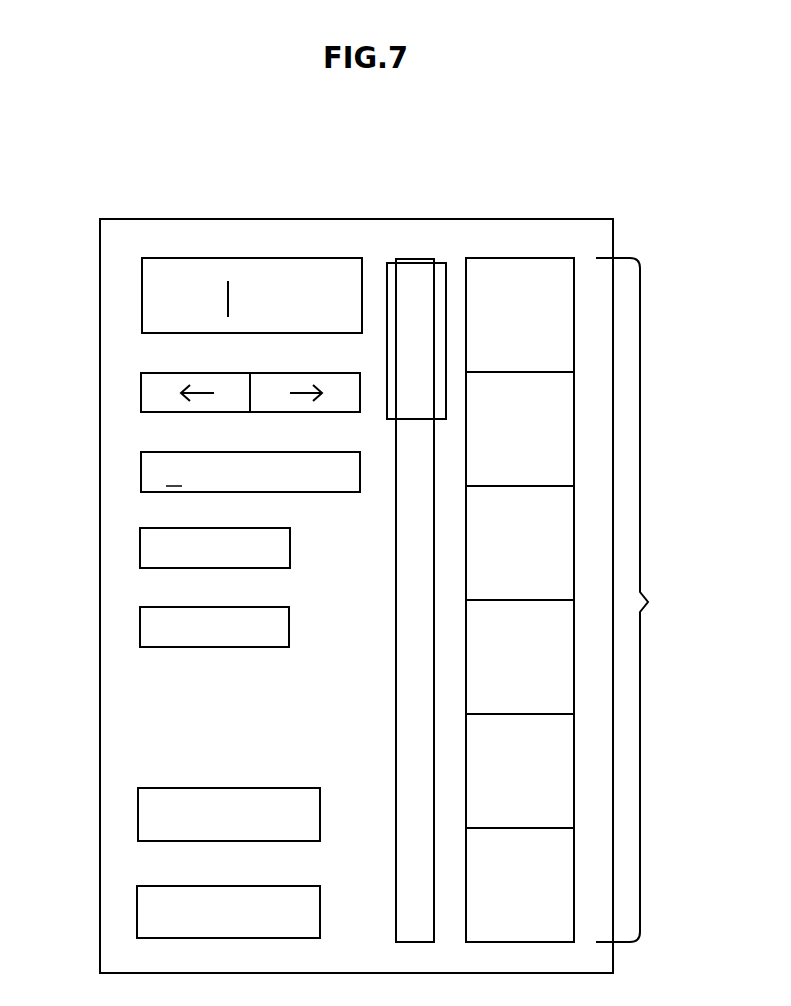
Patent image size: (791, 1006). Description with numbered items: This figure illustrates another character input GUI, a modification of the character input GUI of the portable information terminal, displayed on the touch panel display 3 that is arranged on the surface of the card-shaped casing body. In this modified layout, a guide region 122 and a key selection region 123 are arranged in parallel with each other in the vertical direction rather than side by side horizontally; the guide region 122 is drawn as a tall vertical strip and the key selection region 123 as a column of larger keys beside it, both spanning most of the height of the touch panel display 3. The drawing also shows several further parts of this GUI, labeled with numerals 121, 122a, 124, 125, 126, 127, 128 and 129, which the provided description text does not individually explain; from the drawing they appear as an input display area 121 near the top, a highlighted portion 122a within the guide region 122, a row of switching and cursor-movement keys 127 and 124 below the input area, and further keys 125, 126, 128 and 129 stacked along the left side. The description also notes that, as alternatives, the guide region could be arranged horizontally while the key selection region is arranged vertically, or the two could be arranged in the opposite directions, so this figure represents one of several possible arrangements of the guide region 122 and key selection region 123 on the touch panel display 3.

The touch panel display 3 is at (598, 234).
The input display field 121 is at (262, 258).
The guide region 122 is at (410, 259).
The character selection frame 122a is at (442, 263).
The key selection region 123 is at (583, 600).
The character type switching button 124 is at (141, 474).
The space button 125 is at (140, 550).
The backspace button 126 is at (140, 628).
The cursor movement buttons 127 is at (275, 373).
The cancel button 128 is at (138, 817).
The OK button 129 is at (137, 914).